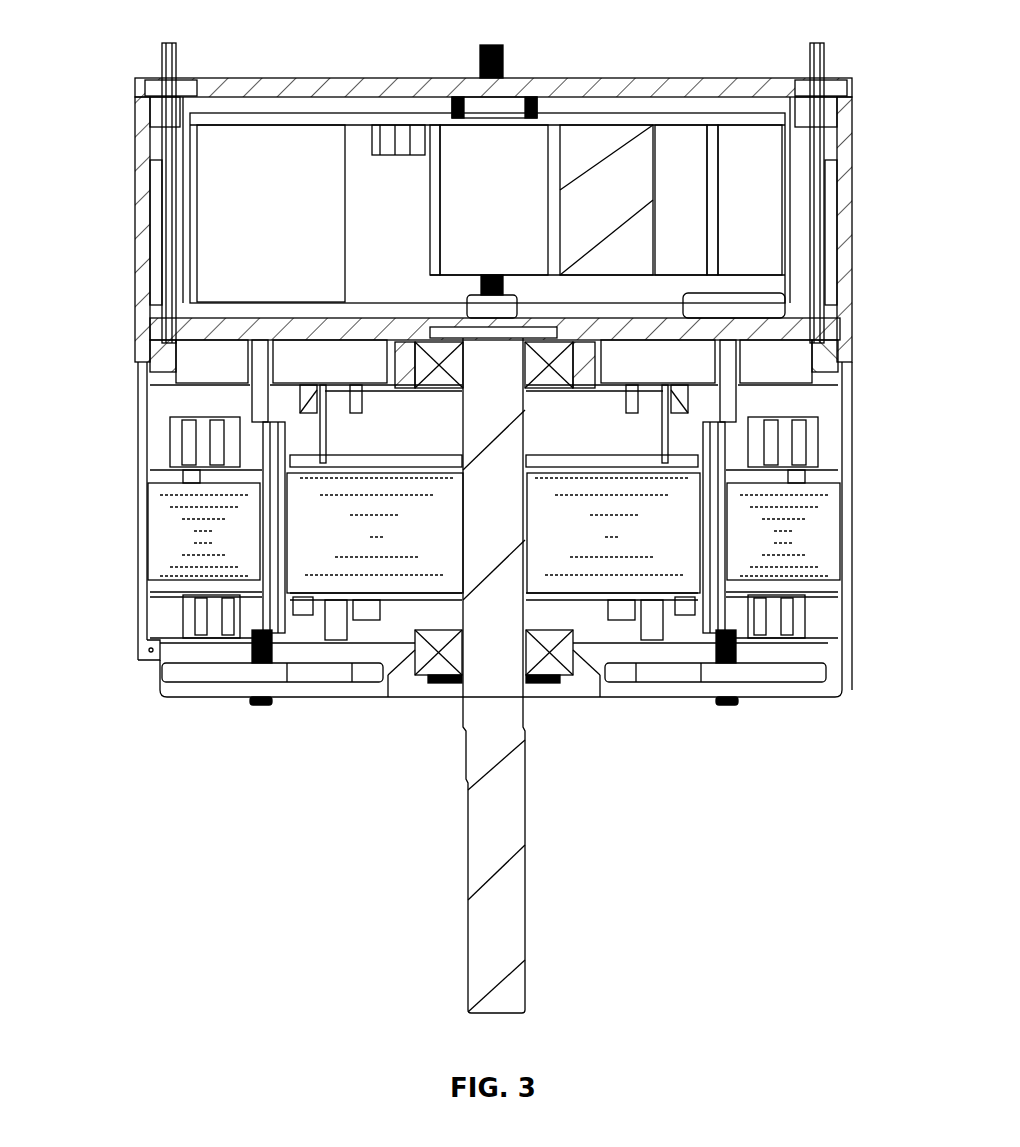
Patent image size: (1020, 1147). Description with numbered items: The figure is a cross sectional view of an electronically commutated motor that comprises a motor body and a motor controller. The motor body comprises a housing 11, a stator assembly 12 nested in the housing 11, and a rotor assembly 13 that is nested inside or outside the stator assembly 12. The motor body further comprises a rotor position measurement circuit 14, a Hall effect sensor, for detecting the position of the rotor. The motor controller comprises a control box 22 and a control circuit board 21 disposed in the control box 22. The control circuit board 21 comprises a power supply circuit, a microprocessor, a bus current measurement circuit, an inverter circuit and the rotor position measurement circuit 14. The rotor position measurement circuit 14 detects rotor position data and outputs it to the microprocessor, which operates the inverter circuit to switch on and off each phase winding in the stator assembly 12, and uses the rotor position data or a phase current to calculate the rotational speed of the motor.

The housing 11 is at (862, 632).
The stator assembly 12 is at (800, 535).
The rotor assembly 13 is at (408, 537).
The rotor position measurement circuit 14 is at (737, 417).
The control circuit board 21 is at (342, 118).
The control box 22 is at (140, 200).